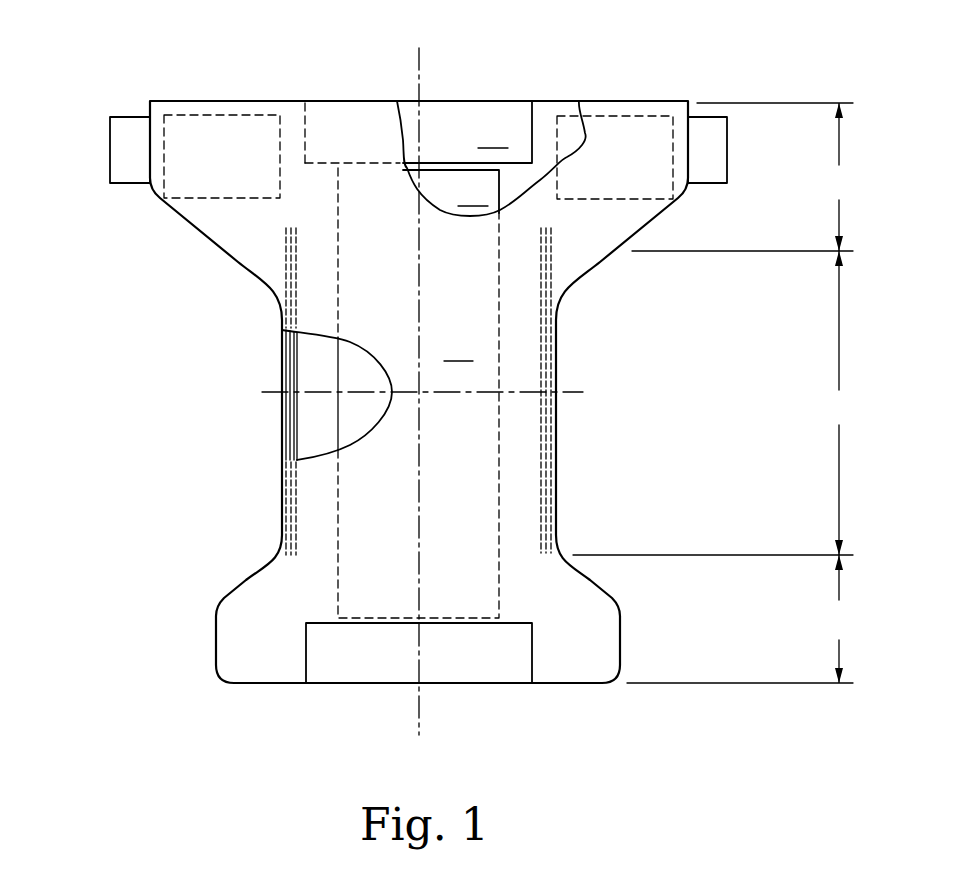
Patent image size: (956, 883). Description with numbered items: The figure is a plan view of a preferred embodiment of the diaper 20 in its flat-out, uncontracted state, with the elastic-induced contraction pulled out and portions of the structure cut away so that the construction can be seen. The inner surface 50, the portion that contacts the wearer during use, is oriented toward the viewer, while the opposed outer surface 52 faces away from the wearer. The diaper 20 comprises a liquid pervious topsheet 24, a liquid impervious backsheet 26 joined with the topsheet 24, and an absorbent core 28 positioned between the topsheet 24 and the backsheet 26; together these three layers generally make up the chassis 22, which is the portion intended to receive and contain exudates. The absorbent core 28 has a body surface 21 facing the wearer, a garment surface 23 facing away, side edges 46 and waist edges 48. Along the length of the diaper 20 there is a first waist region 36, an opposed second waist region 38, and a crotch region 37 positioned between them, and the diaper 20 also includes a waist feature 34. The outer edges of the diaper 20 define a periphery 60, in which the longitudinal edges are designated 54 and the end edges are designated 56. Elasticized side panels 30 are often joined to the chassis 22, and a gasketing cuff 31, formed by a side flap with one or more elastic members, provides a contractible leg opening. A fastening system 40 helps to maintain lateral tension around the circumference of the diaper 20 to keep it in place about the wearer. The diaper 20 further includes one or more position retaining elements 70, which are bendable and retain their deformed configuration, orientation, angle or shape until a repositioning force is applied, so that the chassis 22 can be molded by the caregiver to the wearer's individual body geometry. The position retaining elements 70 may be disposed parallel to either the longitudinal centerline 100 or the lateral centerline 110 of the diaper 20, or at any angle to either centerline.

The diaper 20 is at (652, 369).
The body surface 21 is at (347, 367).
The chassis 22 is at (522, 467).
The garment surface 23 is at (347, 427).
The topsheet 24 is at (418, 393).
The backsheet 26 is at (543, 123).
The absorbent core 28 is at (451, 191).
The elasticized side panels 30 is at (243, 243).
The gasketing cuff 31 is at (285, 488).
The waist feature 34 is at (330, 668).
The first waist region 36 is at (742, 619).
The crotch region 37 is at (715, 403).
The second waist region 38 is at (744, 177).
The fastening system 40 is at (126, 178).
The side edges 46 is at (337, 408).
The waist edges 48 is at (373, 163).
The inner surface 50 is at (242, 652).
The outer surface 52 is at (287, 588).
The longitudinal edges 54 is at (557, 352).
The end edges 56 is at (320, 100).
The periphery 60 is at (557, 518).
The position retaining element 70 is at (203, 125).
The longitudinal centerline 100 is at (419, 58).
The lateral centerline 110 is at (572, 393).